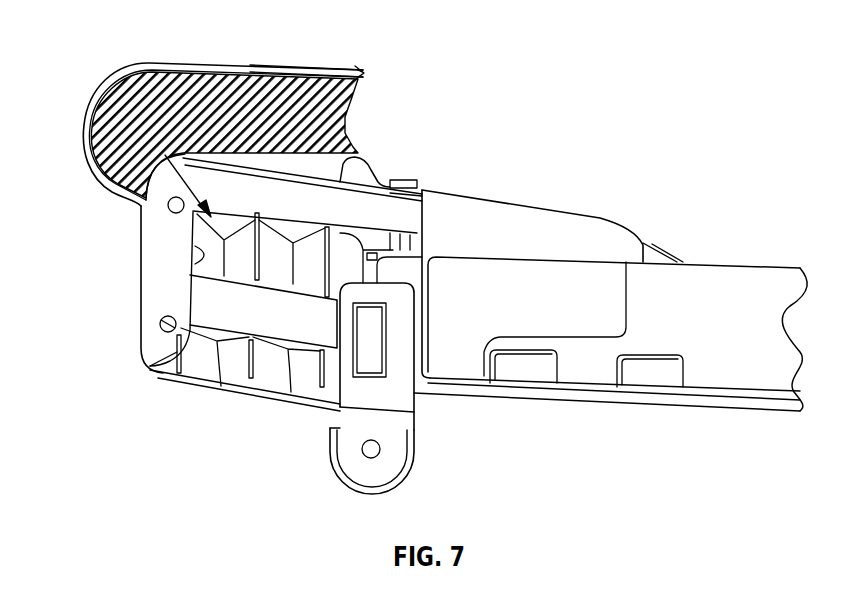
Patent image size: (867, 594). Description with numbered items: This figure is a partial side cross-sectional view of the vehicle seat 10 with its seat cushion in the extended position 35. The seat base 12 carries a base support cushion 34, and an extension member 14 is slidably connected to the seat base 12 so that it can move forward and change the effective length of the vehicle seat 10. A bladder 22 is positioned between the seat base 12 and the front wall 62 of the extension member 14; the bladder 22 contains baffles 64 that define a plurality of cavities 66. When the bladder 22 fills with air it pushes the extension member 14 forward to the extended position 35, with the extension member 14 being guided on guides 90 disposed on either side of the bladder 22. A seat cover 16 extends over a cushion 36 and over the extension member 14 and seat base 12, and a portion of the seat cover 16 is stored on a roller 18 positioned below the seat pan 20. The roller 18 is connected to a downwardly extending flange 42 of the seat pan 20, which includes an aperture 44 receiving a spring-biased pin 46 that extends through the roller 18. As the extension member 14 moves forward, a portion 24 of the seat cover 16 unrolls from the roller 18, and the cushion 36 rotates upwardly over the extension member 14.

The vehicle seat 10 is at (128, 50).
The seat base 12 is at (737, 262).
The extension member 14 is at (165, 280).
The seat cover 16 is at (180, 383).
The roller 18 is at (332, 474).
The seat pan 20 is at (415, 418).
The bladder 22 is at (92, 141).
The portion of the seat cover 24 is at (277, 67).
The base support cushion 34 is at (354, 66).
The extended position 35 is at (78, 234).
The cushion 36 is at (197, 72).
The second flange 42 is at (363, 474).
The aperture 44 is at (381, 448).
The spring-biased pin 46 is at (333, 443).
The front wall of the extension member 62 is at (207, 255).
The baffles 64 is at (215, 340).
The cavities 66 is at (227, 223).
The guides 90 is at (150, 364).